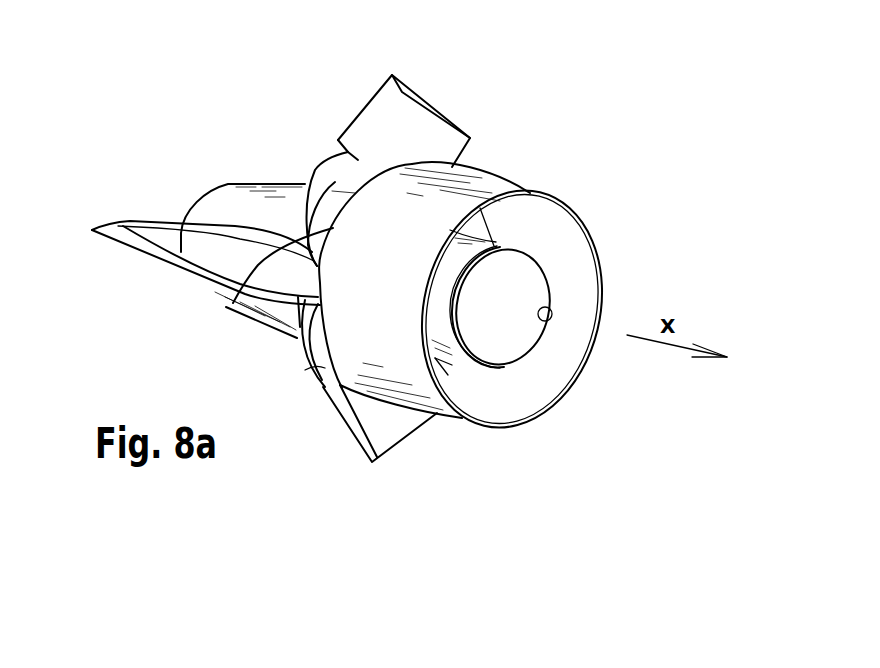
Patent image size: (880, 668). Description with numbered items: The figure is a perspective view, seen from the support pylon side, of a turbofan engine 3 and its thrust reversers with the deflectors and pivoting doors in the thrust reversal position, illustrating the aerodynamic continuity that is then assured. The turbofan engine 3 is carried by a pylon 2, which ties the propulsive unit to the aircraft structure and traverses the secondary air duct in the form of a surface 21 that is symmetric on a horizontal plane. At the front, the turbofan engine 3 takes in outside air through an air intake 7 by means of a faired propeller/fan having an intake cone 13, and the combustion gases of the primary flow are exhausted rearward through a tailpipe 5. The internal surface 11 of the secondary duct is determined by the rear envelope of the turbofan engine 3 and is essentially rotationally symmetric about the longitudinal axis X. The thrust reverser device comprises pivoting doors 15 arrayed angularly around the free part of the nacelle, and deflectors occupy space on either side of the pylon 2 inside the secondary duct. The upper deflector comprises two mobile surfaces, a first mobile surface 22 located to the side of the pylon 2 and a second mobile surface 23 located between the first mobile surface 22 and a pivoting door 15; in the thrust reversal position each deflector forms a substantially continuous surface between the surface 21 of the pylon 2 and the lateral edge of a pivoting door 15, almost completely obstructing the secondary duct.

The pylon 2 is at (133, 237).
The turbofan engine 3 is at (258, 136).
The tailpipe 5 is at (408, 459).
The air intake 7 is at (546, 238).
The internal surface 11 is at (243, 181).
The intake cone 13 is at (520, 332).
The pivoting door 15 is at (440, 76).
The surface 21 is at (170, 223).
The first mobile surface 22 is at (238, 306).
The second mobile surface 23 is at (325, 176).